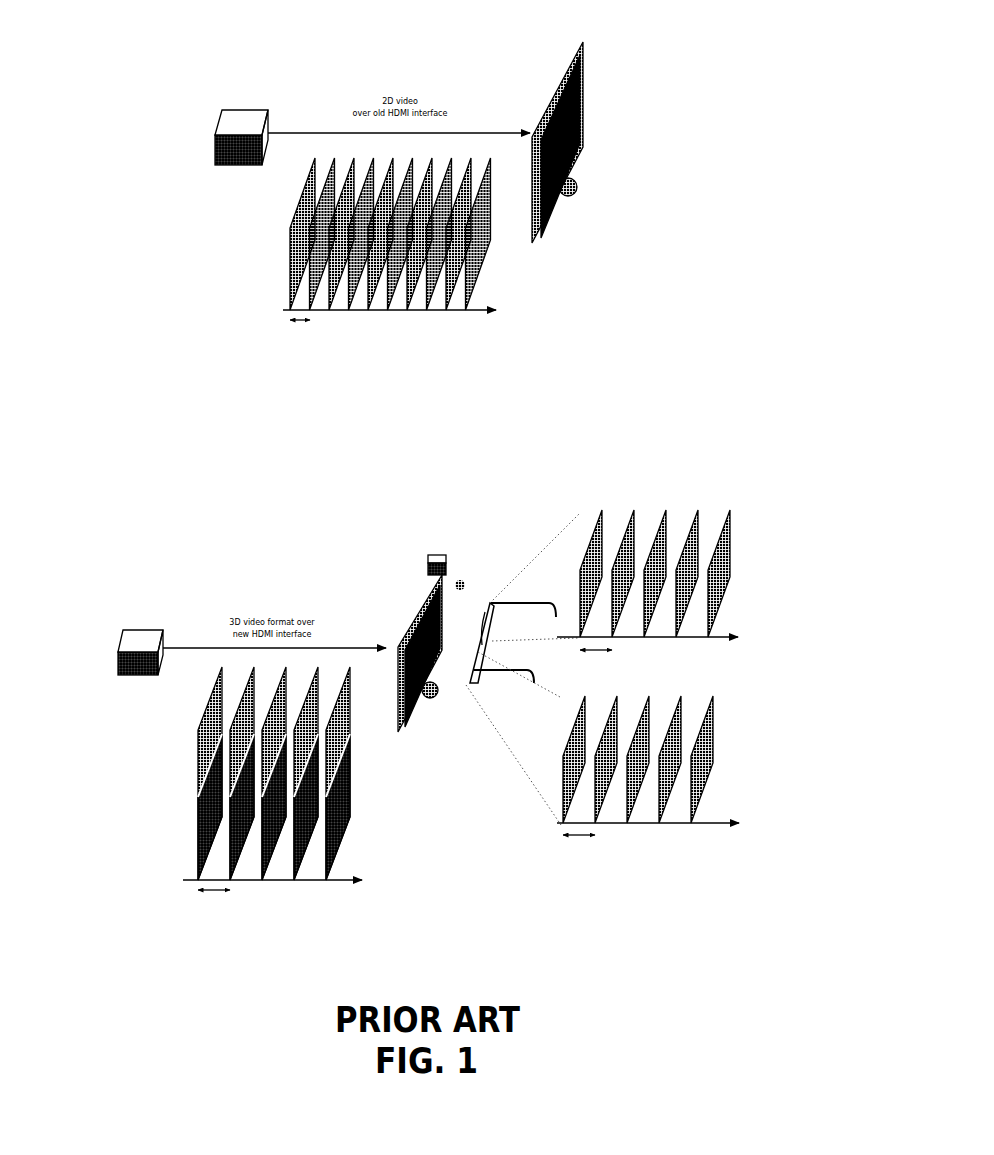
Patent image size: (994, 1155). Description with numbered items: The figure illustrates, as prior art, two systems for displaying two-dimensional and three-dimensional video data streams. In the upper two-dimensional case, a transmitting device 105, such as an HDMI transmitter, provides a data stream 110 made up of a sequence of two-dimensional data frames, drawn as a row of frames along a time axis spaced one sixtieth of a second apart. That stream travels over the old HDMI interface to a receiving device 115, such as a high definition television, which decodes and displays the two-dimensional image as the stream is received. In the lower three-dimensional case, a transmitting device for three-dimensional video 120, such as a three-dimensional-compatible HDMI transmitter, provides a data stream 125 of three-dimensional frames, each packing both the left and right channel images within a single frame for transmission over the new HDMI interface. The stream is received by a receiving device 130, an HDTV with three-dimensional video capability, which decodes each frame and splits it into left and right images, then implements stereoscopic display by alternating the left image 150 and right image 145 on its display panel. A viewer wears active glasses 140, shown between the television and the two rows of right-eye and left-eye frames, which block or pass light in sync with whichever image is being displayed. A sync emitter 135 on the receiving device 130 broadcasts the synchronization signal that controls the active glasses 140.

The transmitting device 105 is at (245, 107).
The data stream 110 is at (378, 328).
The receiving device 115 is at (587, 110).
The transmitting device for 3D video 120 is at (145, 608).
The data stream 125 is at (172, 822).
The receiving device 130 is at (412, 610).
The sync emitter 135 is at (435, 527).
The active glasses 140 is at (492, 577).
The right image 145 is at (743, 543).
The left image 150 is at (743, 745).